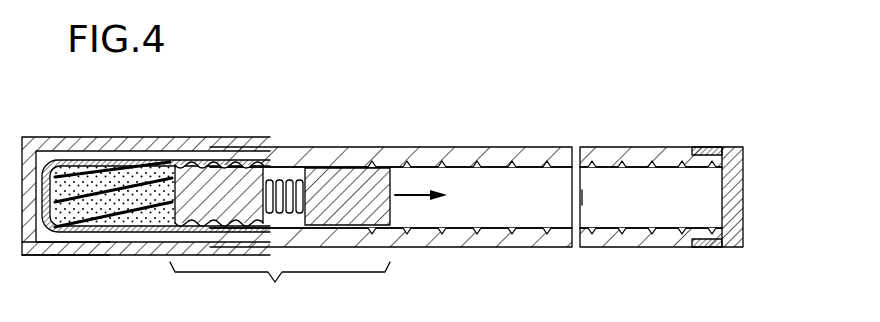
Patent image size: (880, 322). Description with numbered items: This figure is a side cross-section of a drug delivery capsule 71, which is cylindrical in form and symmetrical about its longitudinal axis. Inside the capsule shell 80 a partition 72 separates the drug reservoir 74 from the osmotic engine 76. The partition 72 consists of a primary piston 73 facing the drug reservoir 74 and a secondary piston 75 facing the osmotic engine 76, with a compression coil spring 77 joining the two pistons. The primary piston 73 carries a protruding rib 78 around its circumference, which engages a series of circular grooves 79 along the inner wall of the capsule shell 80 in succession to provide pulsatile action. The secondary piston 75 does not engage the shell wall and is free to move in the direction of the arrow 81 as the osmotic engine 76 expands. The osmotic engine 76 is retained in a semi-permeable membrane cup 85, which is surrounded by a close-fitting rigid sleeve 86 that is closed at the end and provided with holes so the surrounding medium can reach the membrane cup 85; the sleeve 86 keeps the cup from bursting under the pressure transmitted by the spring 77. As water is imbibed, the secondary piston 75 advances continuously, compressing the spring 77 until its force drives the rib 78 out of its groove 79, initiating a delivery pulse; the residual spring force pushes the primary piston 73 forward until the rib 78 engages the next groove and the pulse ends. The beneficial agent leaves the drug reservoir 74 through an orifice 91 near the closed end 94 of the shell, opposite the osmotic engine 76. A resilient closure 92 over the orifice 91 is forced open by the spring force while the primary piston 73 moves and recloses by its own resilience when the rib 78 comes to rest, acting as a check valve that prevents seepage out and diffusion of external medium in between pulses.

The drug delivery capsule 71 is at (630, 105).
The partition 72 is at (280, 291).
The primary piston 73 is at (356, 170).
The drug reservoir 74 is at (491, 207).
The secondary piston 75 is at (181, 140).
The osmotic engine 76 is at (128, 137).
The compression coil spring 77 is at (290, 178).
The protruding rib 78 is at (397, 250).
The circular grooves 79 is at (443, 170).
The capsule shell 80 is at (549, 147).
The arrow 81 is at (412, 190).
The semi-permeable membrane cup 85 is at (143, 245).
The sleeve 86 is at (68, 258).
The orifice 91 is at (720, 170).
The resilient closure 92 is at (711, 148).
The end 94 is at (740, 230).